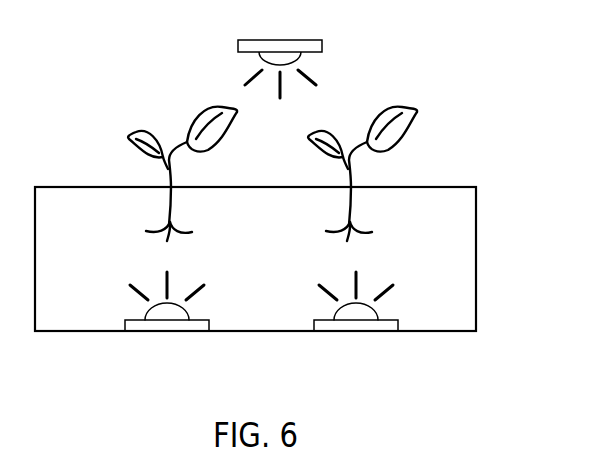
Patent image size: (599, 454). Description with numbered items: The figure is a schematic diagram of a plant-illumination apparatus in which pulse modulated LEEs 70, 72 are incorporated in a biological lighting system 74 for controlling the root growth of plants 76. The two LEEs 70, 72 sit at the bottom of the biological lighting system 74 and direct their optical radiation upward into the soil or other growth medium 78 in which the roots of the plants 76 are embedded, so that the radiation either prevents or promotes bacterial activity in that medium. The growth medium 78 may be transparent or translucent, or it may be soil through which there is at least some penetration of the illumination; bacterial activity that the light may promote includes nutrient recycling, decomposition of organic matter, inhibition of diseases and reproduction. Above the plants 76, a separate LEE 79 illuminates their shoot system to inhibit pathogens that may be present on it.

The pulse modulated LEE 70 is at (167, 332).
The pulse modulated LEE 72 is at (355, 332).
The biological lighting system 74 is at (476, 260).
The plants 76 is at (407, 137).
The growth medium 78 is at (272, 277).
The LEE 79 is at (320, 48).